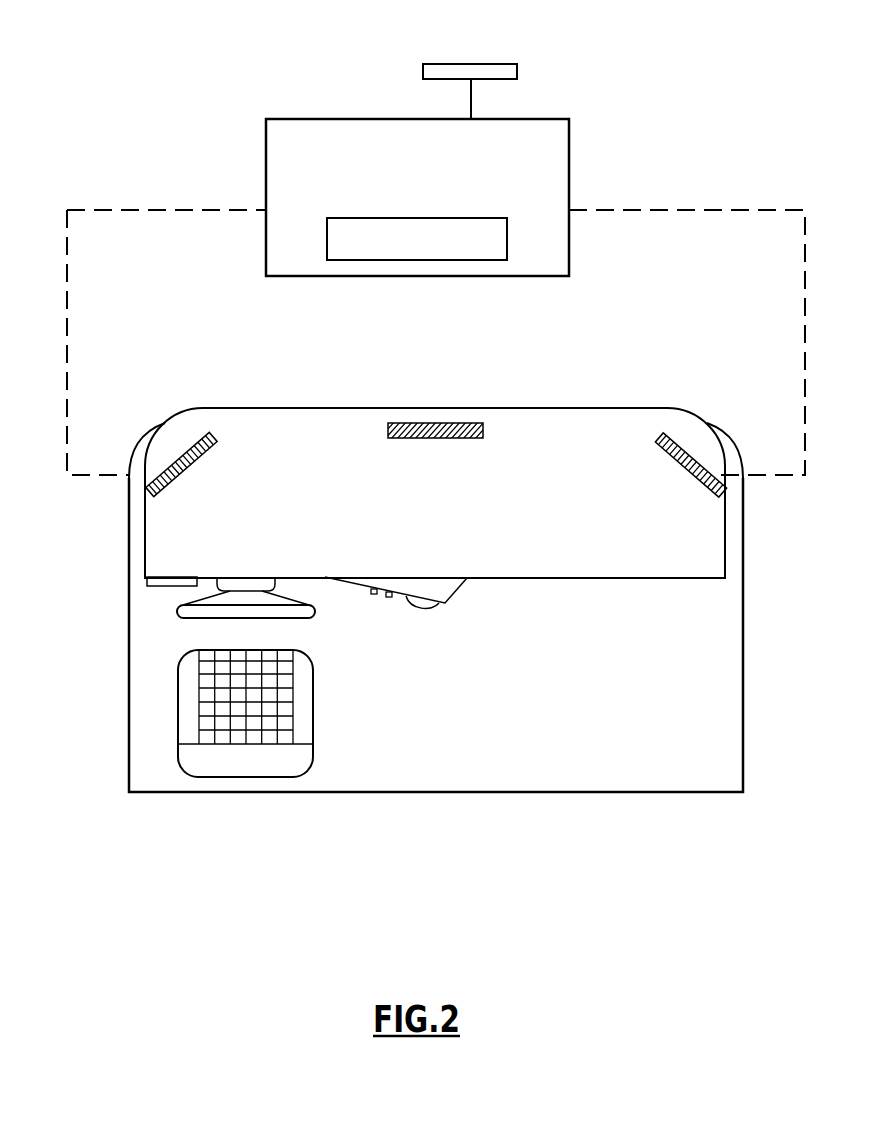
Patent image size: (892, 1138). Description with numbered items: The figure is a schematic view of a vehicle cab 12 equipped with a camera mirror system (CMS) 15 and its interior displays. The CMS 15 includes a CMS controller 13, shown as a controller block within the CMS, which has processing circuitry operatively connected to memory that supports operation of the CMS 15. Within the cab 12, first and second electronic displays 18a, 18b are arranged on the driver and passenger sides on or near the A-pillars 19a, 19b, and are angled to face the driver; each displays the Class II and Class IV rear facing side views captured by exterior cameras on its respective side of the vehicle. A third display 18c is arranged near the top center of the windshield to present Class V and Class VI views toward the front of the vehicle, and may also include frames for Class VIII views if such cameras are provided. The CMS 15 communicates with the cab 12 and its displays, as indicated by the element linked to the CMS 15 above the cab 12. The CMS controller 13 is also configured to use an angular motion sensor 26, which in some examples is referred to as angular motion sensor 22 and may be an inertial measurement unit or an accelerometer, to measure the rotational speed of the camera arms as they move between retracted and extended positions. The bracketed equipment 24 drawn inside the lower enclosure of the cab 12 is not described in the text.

The vehicle cab 12 is at (553, 375).
The CMS controller 13 is at (326, 247).
The camera mirror system (CMS) 15 is at (569, 132).
The first electronic display 18a is at (173, 438).
The second electronic display 18b is at (697, 438).
The third display 18c is at (505, 64).
The A-pillar 19a is at (147, 448).
The A-pillar 19b is at (725, 448).
The angular motion sensor 22 is at (658, 739).
The computer system 24 is at (375, 603).
The angular motion sensor 26 is at (300, 700).